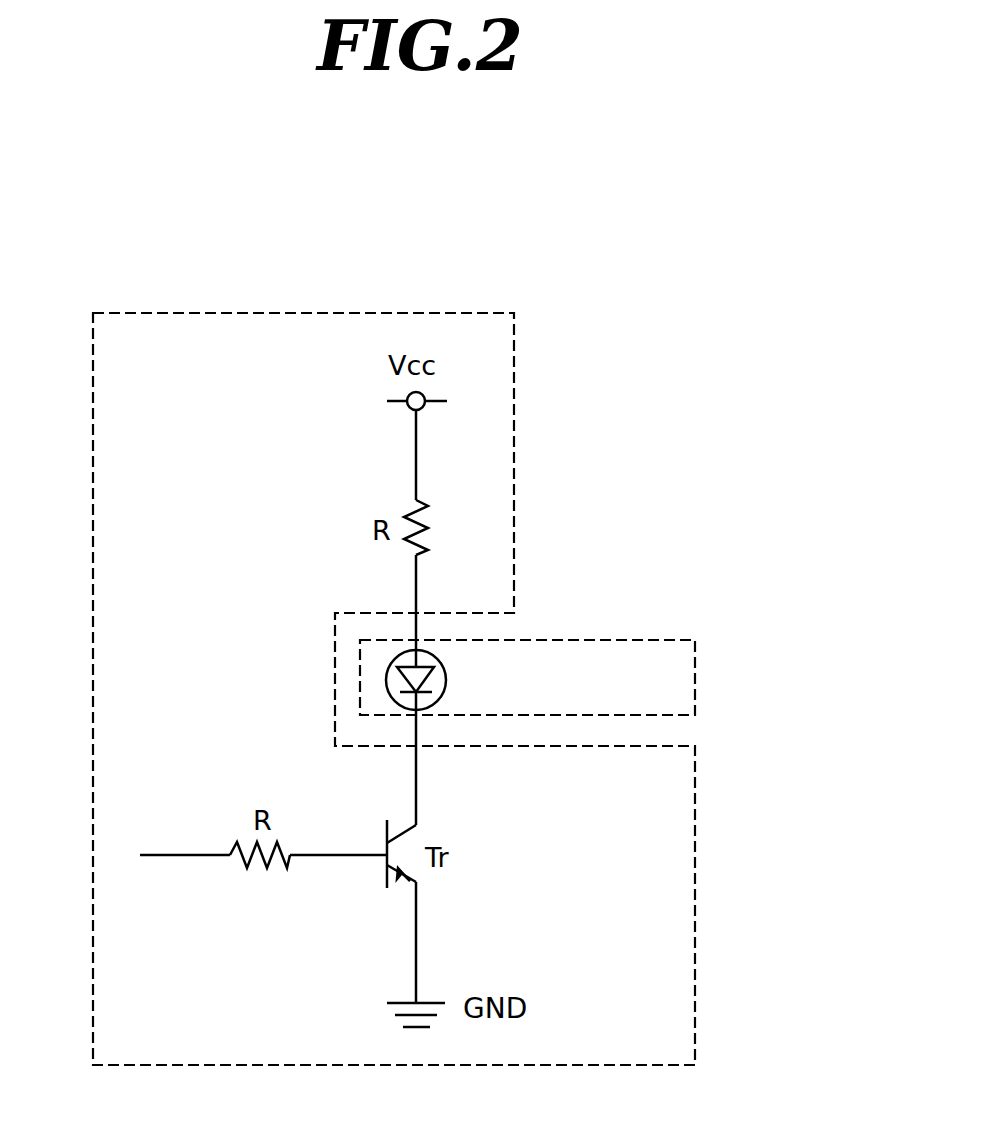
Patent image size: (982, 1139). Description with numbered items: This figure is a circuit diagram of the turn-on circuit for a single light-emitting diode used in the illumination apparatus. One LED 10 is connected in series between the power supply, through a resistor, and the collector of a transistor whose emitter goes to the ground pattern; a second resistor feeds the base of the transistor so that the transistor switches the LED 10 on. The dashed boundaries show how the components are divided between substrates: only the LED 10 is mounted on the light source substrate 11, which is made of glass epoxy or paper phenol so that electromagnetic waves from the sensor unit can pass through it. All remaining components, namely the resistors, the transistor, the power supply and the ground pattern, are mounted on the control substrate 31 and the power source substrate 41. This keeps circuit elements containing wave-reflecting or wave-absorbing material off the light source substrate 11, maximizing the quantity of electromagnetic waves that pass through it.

The LED 10 is at (440, 678).
The light source substrate 11 is at (665, 661).
The control substrate 31 is at (668, 929).
The power source substrate 41 is at (466, 689).